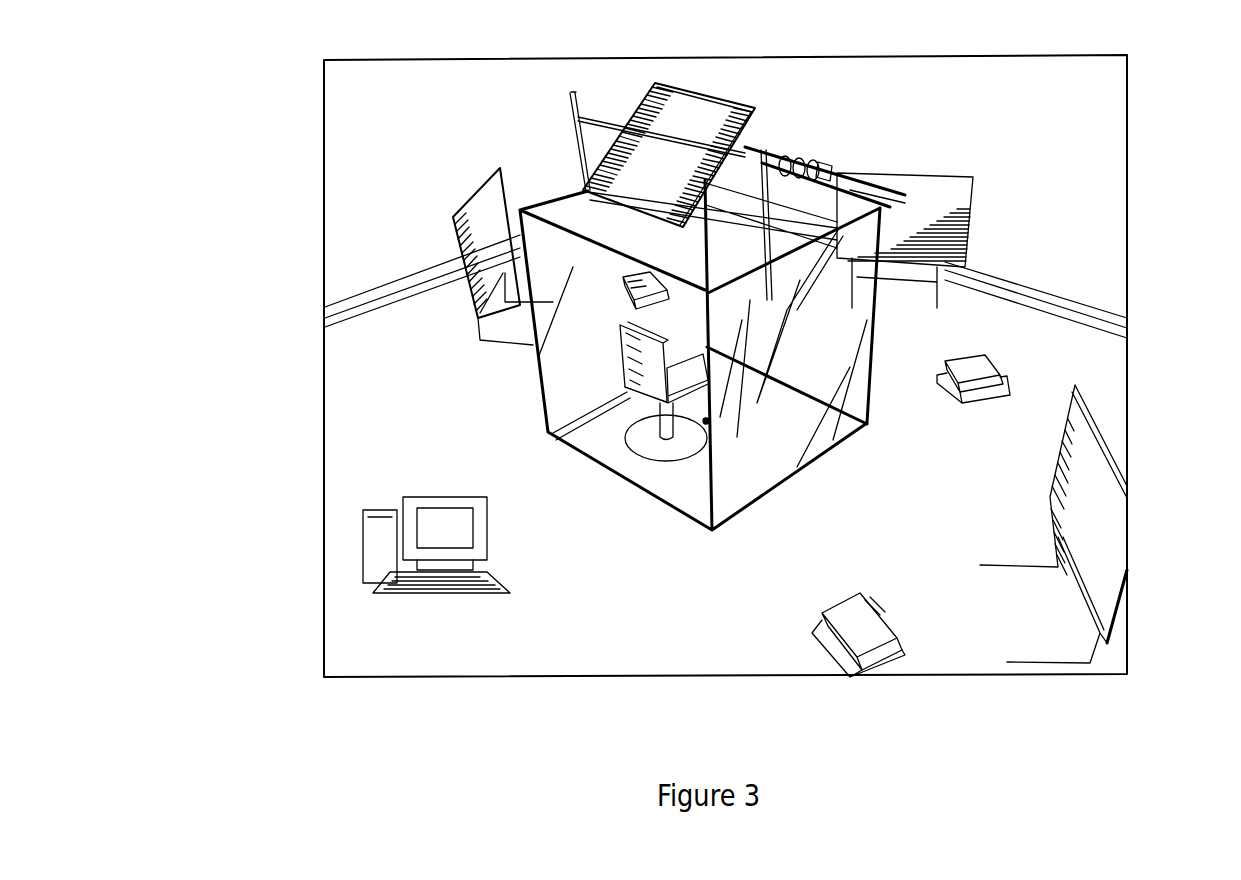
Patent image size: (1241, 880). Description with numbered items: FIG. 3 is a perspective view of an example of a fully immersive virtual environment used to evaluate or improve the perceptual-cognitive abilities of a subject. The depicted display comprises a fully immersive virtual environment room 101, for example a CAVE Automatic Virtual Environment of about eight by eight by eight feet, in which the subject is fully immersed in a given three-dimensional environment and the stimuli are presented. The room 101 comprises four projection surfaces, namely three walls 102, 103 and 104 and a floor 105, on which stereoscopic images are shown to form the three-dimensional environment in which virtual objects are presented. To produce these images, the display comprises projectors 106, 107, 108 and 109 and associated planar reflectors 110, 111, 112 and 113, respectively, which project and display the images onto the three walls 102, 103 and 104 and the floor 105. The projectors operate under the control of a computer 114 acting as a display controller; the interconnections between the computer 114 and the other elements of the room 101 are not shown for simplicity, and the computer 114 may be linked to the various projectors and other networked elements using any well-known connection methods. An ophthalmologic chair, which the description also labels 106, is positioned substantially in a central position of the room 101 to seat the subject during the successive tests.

The fully immersive virtual environment room 101 is at (682, 485).
The wall 102 is at (555, 352).
The wall 103 is at (748, 210).
The wall 104 is at (833, 325).
The floor 105 is at (740, 480).
The projector 106 is at (707, 350).
The projector 107 is at (640, 287).
The projector 108 is at (978, 368).
The projector 109 is at (862, 633).
The planar reflector 110 is at (697, 120).
The planar reflector 111 is at (485, 187).
The planar reflector 112 is at (943, 202).
The planar reflector 113 is at (1097, 577).
The computer 114 is at (363, 555).